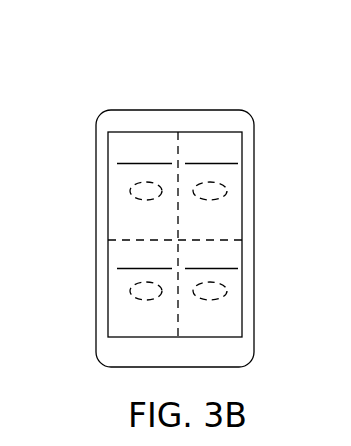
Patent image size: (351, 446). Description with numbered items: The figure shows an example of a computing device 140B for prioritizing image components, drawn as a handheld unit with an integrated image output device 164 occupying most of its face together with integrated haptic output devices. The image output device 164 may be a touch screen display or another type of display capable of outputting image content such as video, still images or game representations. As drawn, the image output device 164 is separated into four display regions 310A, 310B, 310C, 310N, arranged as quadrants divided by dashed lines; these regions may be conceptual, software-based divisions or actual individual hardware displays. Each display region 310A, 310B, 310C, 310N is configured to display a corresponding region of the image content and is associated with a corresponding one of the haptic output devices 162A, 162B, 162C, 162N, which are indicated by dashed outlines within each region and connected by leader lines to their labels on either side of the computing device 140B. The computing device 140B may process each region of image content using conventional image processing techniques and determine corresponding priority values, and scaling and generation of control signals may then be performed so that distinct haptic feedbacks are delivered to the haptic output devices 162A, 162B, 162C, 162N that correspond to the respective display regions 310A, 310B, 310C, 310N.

The computing device 140B is at (105, 61).
The image output device 164 is at (213, 132).
The display region 310A is at (144, 153).
The display region 310B is at (211, 153).
The display region 310C is at (144, 258).
The display region 310N is at (211, 258).
The haptic output device 162A is at (130, 195).
The haptic output device 162B is at (227, 190).
The haptic output device 162C is at (130, 296).
The haptic output device 162N is at (227, 291).